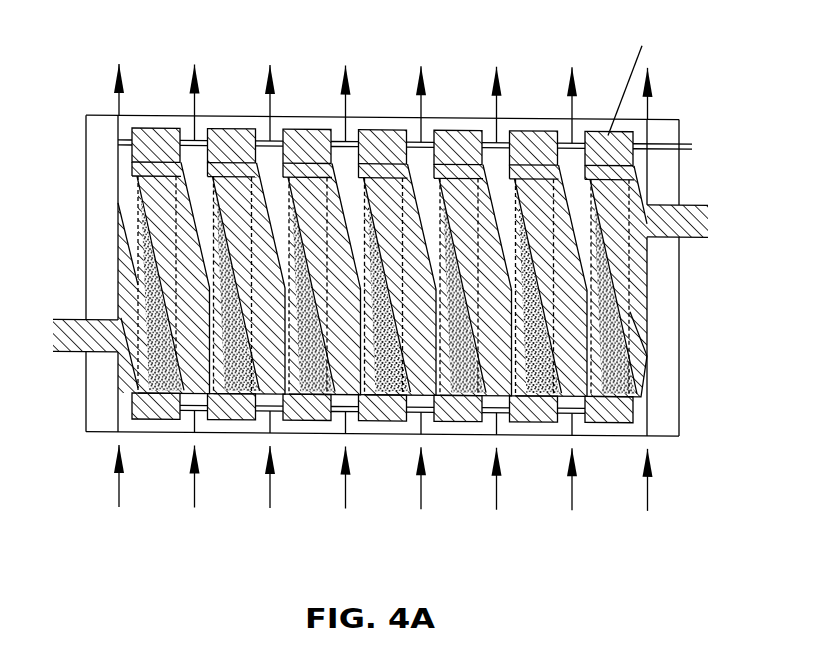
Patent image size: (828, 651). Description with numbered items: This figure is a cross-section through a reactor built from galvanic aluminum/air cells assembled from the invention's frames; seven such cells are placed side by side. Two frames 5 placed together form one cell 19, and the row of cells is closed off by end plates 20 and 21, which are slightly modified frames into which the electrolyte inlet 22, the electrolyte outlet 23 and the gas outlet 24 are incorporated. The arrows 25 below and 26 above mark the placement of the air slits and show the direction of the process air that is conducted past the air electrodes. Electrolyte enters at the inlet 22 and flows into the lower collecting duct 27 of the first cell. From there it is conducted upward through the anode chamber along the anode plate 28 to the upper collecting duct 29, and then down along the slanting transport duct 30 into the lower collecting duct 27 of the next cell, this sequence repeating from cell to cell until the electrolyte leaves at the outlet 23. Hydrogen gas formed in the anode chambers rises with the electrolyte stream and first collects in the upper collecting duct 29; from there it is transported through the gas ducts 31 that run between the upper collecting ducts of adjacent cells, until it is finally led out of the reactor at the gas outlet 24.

The frame 5 is at (217, 425).
The cell 19 is at (241, 350).
The end plate 20 is at (97, 413).
The end plate 21 is at (668, 425).
The electrolyte inlet 22 is at (70, 337).
The electrolyte outlet 23 is at (702, 234).
The gas outlet 24 is at (684, 146).
The arrows 25 is at (496, 497).
The arrows 26 is at (492, 78).
The lower collecting duct 27 is at (168, 412).
The anode plate 28 is at (135, 245).
The upper collecting duct 29 is at (143, 132).
The slanting transport duct 30 is at (180, 271).
The gas ducts 31 is at (260, 137).